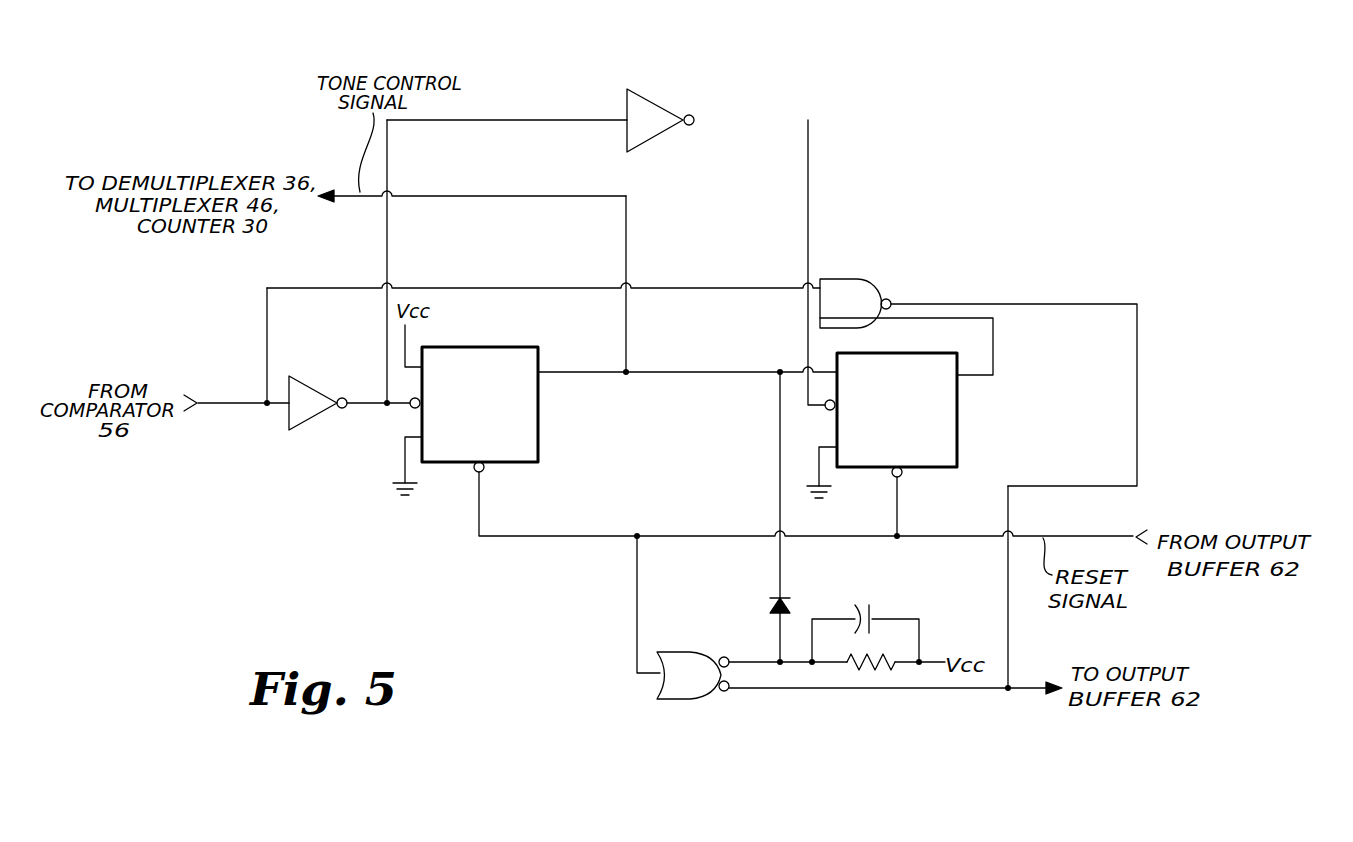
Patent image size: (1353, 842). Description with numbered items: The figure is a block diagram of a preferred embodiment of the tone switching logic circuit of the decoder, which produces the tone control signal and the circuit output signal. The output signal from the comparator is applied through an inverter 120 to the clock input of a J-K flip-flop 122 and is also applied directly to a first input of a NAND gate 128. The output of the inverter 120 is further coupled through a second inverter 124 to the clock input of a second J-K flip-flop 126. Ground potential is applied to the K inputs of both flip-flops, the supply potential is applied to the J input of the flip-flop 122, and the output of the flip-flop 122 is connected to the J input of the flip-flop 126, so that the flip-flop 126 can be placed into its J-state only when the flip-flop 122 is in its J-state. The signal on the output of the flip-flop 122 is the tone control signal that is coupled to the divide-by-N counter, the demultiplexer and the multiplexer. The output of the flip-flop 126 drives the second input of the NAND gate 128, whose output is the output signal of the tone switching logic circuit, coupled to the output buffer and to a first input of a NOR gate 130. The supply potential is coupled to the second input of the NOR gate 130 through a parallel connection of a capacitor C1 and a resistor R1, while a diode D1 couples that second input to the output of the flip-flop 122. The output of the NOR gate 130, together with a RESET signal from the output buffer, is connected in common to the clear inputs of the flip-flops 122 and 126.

The inverter 120 is at (316, 388).
The J-K flip-flop 122 is at (520, 347).
The inverter 124 is at (667, 112).
The J-K flip-flop 126 is at (910, 353).
The NAND gate 128 is at (1062, 279).
The NOR gate 130 is at (694, 652).
The diode D1 is at (795, 606).
The capacitor C1 is at (874, 612).
The resistor R1 is at (872, 660).